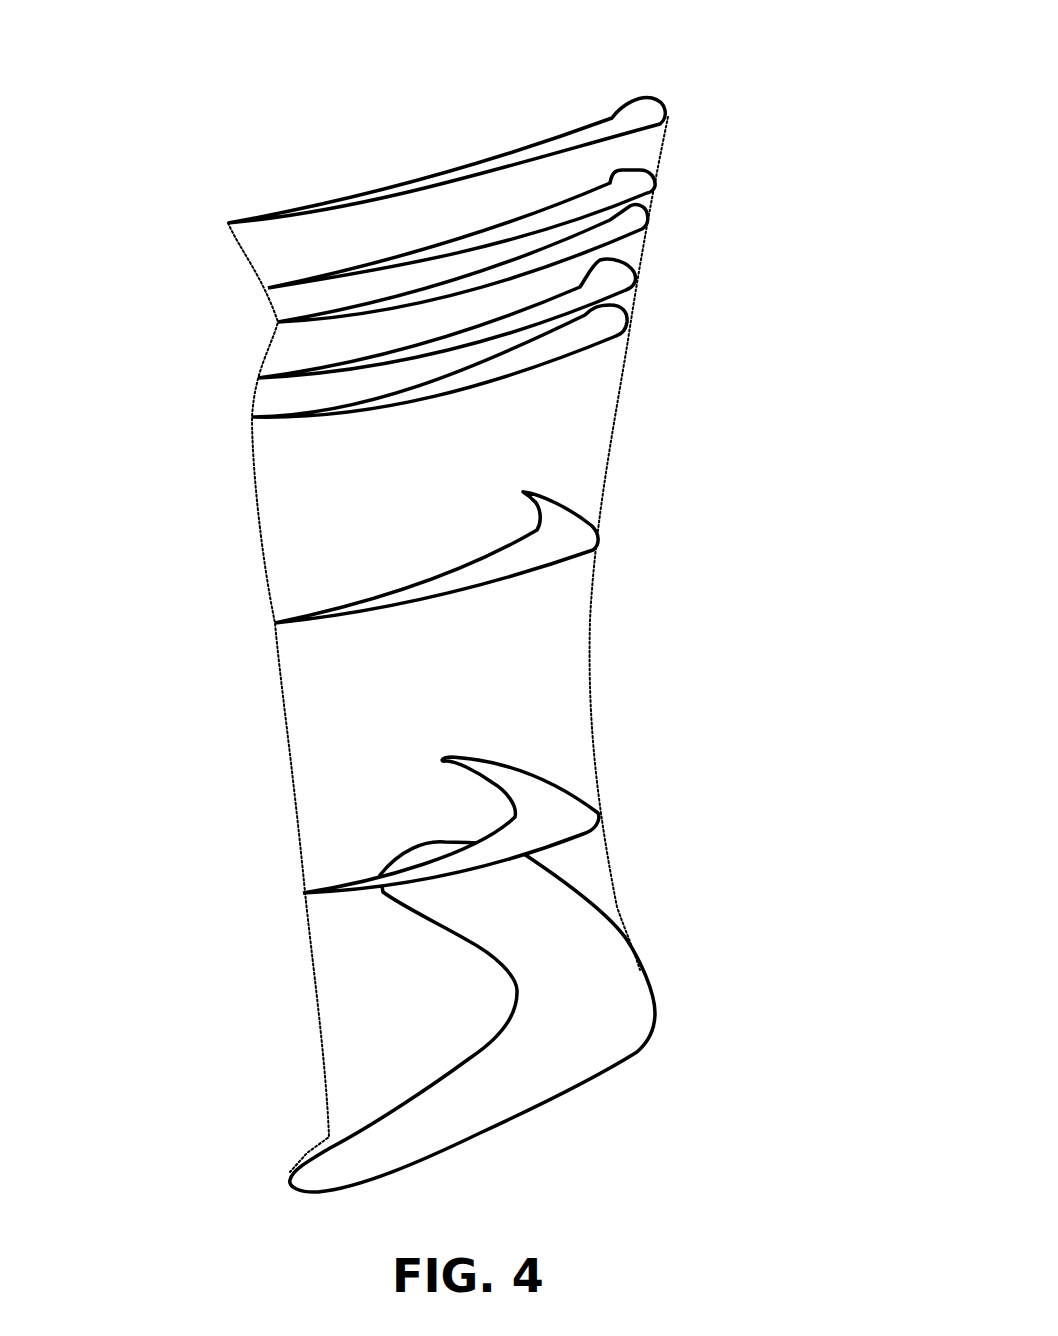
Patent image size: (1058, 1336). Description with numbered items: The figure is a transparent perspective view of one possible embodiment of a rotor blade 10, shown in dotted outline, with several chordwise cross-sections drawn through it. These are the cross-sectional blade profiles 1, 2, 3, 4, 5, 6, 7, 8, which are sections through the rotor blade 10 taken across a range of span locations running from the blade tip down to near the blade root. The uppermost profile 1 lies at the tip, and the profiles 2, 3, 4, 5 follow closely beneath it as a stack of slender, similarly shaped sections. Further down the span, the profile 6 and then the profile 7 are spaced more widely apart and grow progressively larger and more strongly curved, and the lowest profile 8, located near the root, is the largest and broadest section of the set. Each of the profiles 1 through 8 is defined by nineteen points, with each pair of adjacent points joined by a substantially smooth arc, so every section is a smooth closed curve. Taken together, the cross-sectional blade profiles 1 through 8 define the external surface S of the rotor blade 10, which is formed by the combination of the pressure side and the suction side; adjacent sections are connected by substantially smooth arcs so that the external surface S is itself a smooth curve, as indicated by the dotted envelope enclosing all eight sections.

The cross-sectional blade profile 1 is at (645, 113).
The cross-sectional blade profile 2 is at (632, 188).
The cross-sectional blade profile 3 is at (628, 222).
The cross-sectional blade profile 4 is at (613, 280).
The cross-sectional blade profile 5 is at (605, 325).
The cross-sectional blade profile 6 is at (567, 530).
The cross-sectional blade profile 7 is at (567, 810).
The cross-sectional blade profile 8 is at (603, 970).
The rotor blade 10 is at (406, 618).
The external surface S is at (266, 721).